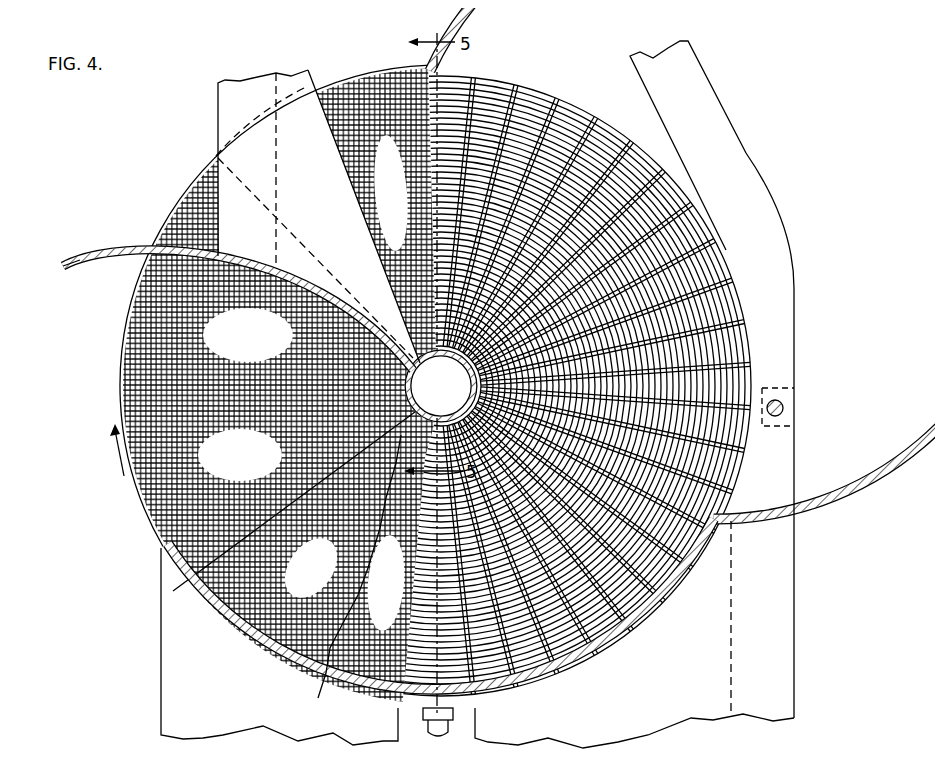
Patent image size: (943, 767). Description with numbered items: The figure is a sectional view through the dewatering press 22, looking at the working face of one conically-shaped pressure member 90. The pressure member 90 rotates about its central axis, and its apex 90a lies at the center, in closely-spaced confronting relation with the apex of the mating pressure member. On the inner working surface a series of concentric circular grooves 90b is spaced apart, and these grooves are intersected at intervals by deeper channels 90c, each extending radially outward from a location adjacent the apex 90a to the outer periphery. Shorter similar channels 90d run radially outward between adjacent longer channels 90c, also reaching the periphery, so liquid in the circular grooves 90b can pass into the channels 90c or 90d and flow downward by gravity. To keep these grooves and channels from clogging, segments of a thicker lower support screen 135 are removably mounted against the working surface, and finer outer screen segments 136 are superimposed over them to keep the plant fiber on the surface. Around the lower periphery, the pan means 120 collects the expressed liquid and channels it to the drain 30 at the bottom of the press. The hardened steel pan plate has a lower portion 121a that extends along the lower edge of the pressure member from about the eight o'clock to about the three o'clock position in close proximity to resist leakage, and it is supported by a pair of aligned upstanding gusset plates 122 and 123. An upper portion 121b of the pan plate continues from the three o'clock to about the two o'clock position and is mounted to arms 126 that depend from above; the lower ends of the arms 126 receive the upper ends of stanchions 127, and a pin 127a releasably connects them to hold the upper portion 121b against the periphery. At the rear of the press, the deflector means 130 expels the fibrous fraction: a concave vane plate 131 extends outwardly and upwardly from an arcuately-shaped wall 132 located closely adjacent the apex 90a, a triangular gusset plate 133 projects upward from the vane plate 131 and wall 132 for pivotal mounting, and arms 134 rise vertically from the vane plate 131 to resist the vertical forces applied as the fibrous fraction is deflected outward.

The dewatering press 22 is at (566, 78).
The drain 30 is at (420, 722).
The pressure member 90 is at (536, 78).
The apex 90a is at (400, 330).
The concentric circular grooves 90b is at (596, 125).
The deeper channels 90c is at (478, 75).
The shorter channels 90d is at (578, 108).
The pan means 120 is at (245, 662).
The lower portion of pan plate 121a is at (530, 700).
The upper portion of pan plate 121b is at (772, 300).
The gusset plate 122 is at (160, 712).
The gusset plate 123 is at (640, 735).
The arm 126 is at (738, 145).
The stanchion 127 is at (723, 640).
The pin 127a is at (776, 400).
The deflector means 130 is at (135, 243).
The vane plate 131 is at (102, 265).
The arcuately-shaped wall 132 is at (441, 386).
The gusset plate 133 is at (305, 100).
The arm 134 is at (278, 62).
The lower screen segments 135 is at (345, 670).
The outer screen segments 136 is at (375, 55).